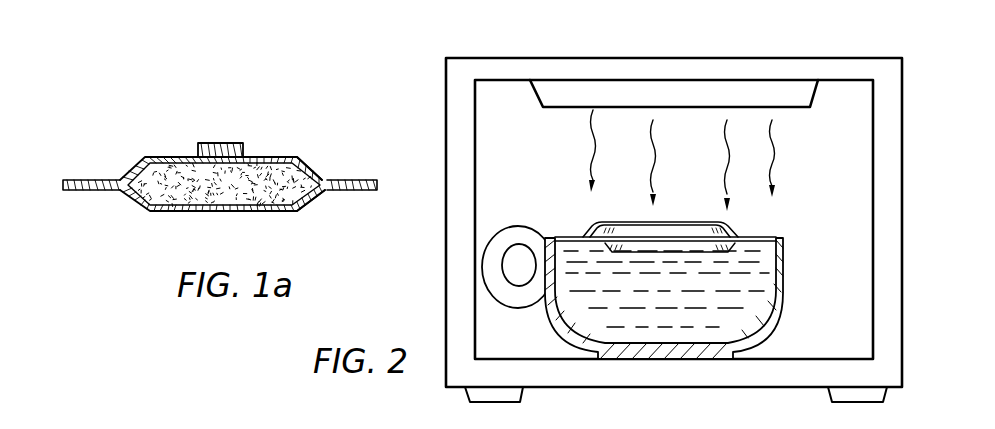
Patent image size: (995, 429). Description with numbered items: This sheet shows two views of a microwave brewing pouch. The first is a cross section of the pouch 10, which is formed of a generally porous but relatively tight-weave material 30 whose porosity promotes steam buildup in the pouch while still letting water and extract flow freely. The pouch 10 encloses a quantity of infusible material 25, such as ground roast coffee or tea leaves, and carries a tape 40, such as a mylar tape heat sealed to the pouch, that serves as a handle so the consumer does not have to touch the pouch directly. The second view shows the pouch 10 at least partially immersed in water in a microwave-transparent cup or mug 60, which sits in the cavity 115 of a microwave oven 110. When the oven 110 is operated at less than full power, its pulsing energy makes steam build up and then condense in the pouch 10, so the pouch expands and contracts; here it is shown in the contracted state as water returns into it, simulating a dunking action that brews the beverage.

In FIG. 1A, the pouch 10 is at (168, 217).
In FIG. 2, the pouch 10 is at (628, 222).
In FIG. 1A, the infusible material 25 is at (278, 170).
In FIG. 1A, the material 30 is at (313, 168).
In FIG. 1A, the tape 40 is at (222, 142).
In FIG. 2, the container 60 is at (785, 278).
In FIG. 2, the microwave oven 110 is at (677, 58).
In FIG. 2, the cavity 115 is at (523, 163).